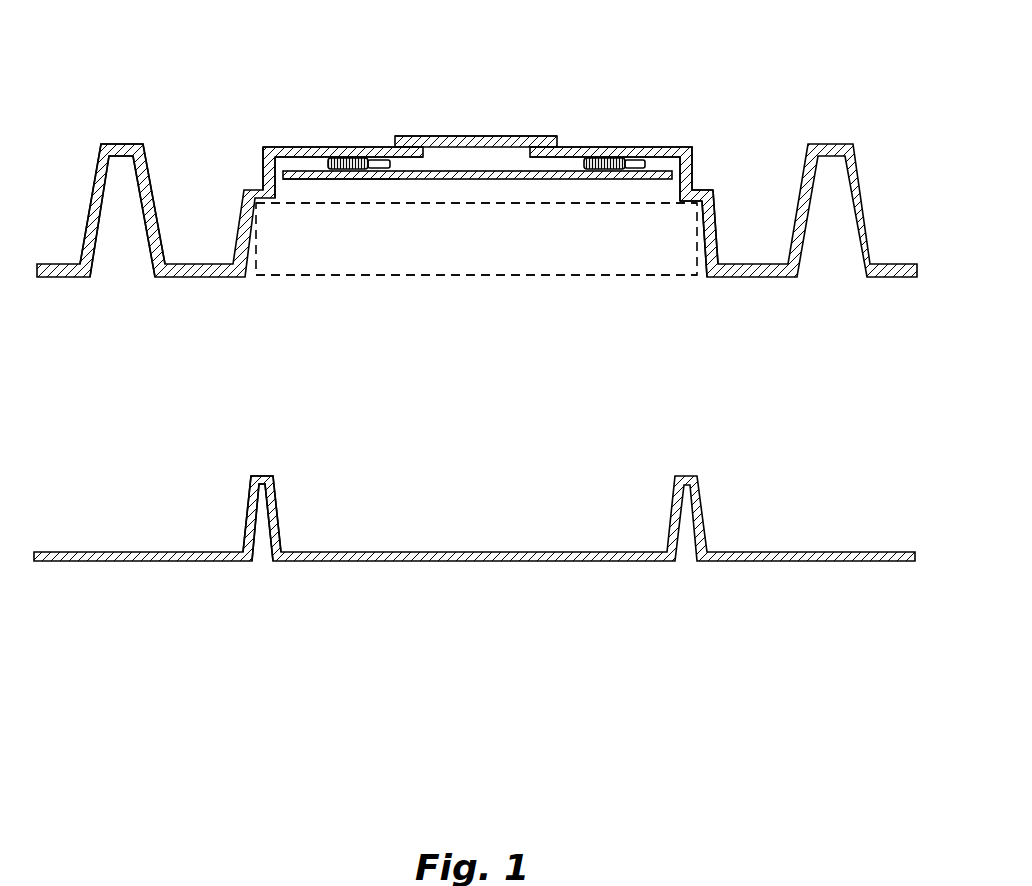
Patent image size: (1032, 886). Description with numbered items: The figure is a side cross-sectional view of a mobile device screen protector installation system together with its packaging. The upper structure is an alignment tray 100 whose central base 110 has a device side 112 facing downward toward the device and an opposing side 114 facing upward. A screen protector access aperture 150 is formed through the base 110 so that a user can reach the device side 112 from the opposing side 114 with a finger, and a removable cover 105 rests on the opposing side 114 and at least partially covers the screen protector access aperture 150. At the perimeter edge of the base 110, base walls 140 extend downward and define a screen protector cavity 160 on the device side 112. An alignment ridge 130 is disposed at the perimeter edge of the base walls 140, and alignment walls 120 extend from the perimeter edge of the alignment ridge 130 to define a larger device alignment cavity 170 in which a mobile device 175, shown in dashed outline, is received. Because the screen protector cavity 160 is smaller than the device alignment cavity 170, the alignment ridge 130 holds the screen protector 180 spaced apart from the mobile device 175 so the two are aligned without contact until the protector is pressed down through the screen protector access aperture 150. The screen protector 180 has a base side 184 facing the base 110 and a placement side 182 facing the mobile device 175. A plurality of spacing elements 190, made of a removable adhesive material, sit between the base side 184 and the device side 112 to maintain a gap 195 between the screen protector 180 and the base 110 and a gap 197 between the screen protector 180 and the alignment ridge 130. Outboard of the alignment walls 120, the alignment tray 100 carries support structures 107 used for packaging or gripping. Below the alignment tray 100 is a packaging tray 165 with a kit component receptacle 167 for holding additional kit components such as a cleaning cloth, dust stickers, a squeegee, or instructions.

The alignment tray 100 is at (232, 60).
The removable cover 105 is at (460, 136).
The support structures 107 is at (122, 143).
The base 110 is at (358, 147).
The device side 112 is at (280, 165).
The opposing side 114 is at (324, 133).
The alignment walls 120 is at (716, 235).
The alignment ridge 130 is at (698, 190).
The base walls 140 is at (694, 150).
The screen protector access aperture 150 is at (494, 148).
The screen protector cavity 160 is at (526, 195).
The packaging tray 165 is at (282, 450).
The kit component receptacle 167 is at (494, 494).
The device alignment cavity 170 is at (437, 254).
The mobile device 175 is at (658, 280).
The screen protector 180 is at (644, 168).
The placement side 182 is at (289, 188).
The base side 184 is at (566, 156).
The spacing elements 190 is at (336, 166).
The gap 195 is at (391, 160).
The gap 197 is at (343, 191).